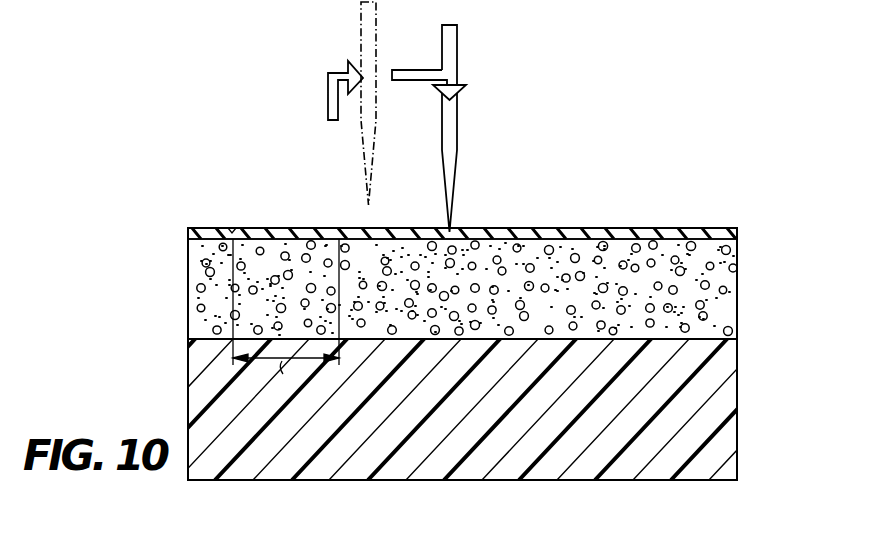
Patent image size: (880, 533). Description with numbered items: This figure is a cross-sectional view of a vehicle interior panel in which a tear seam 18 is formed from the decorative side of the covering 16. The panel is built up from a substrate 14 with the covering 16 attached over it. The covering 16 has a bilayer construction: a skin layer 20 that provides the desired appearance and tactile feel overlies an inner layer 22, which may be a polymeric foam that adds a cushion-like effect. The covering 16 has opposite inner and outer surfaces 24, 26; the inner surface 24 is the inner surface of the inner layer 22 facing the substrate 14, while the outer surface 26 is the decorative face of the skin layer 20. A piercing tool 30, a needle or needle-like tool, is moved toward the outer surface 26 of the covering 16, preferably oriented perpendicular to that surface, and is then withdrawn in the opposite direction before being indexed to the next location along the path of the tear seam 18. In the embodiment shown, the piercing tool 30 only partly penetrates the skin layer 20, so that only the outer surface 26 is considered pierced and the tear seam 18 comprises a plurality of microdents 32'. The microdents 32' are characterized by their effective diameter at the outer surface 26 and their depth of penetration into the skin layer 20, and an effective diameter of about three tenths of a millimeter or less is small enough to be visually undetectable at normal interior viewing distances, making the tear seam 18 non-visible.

The substrate 14 is at (628, 481).
The covering 16 is at (664, 216).
The tear seam 18 is at (216, 246).
The skin layer 20 is at (484, 230).
The inner layer 22 is at (537, 252).
The inner surface 24 is at (540, 340).
The outer surface 26 is at (607, 230).
The piercing tool 30 is at (456, 136).
The microdents 32' is at (284, 293).